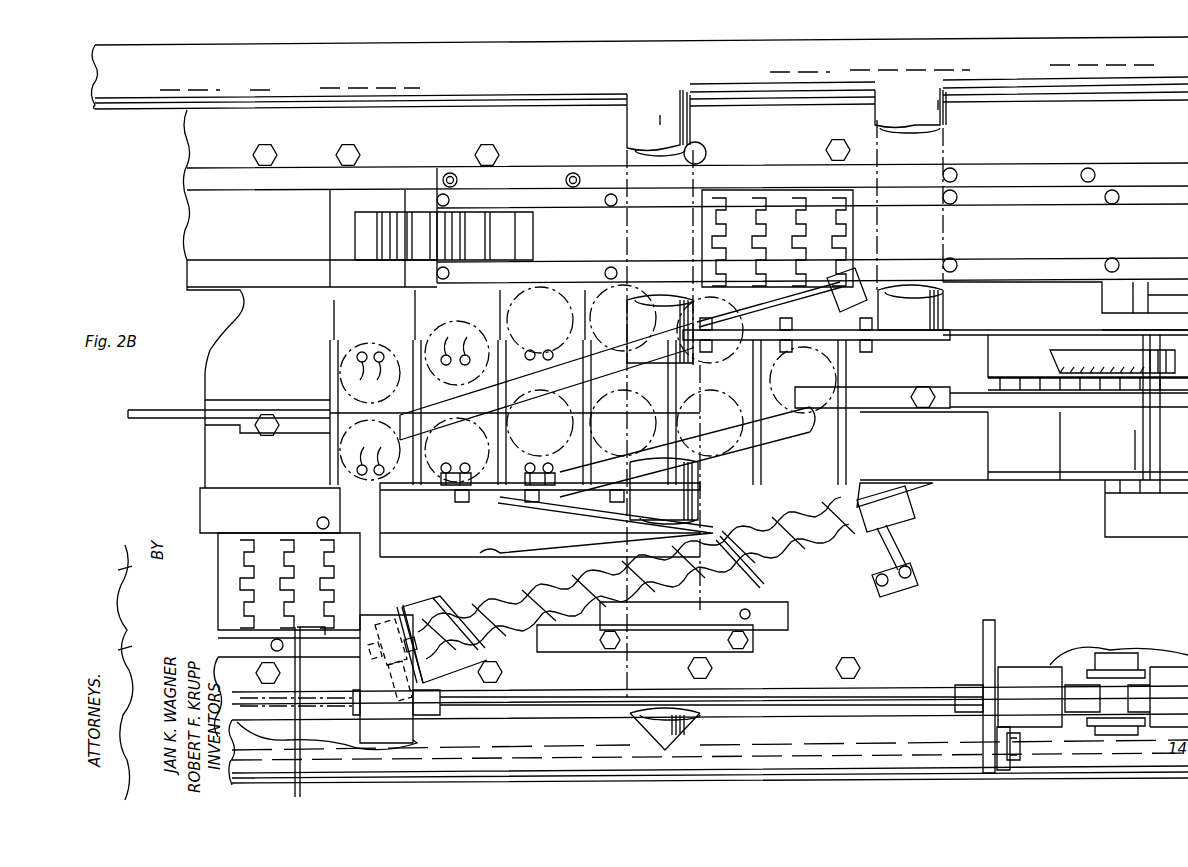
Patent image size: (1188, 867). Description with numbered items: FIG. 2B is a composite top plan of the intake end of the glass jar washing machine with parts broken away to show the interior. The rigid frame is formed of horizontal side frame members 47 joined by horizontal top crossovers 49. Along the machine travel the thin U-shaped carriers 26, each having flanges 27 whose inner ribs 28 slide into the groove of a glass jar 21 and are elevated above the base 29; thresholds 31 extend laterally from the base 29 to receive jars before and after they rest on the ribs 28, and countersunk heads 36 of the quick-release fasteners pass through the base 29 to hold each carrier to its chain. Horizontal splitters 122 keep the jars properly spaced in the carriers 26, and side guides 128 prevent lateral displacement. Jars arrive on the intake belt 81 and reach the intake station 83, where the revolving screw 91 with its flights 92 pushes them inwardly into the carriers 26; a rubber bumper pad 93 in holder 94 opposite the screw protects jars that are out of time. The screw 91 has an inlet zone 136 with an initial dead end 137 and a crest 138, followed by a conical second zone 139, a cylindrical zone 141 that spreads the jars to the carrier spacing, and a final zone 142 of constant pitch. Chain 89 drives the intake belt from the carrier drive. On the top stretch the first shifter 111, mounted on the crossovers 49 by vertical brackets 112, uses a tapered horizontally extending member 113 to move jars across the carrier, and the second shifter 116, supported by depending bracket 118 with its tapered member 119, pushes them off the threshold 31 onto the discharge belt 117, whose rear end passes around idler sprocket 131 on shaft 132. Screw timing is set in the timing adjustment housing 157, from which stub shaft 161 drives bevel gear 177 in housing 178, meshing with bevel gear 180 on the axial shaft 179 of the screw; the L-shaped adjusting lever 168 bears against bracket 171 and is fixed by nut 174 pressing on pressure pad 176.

The glass jar 21 is at (368, 345).
The carrier 26 is at (406, 312).
The flange 27 is at (510, 340).
The rib 28 is at (482, 400).
The base 29 is at (810, 371).
The threshold 31 is at (365, 312).
The countersunk head 36 is at (447, 406).
The horizontal side frame member 47 is at (820, 778).
The horizontal top crossover 49 is at (690, 128).
The intake belt 81 is at (287, 635).
The intake station 83 is at (448, 535).
The chain 89 is at (1018, 374).
The screw 91 is at (529, 650).
The flight 92 is at (642, 598).
The rubber bumper pad 93 is at (497, 546).
The holder 94 is at (515, 513).
The first shifter 111 is at (790, 435).
The vertical bracket 112 is at (398, 490).
The tapered horizontally extending member 113 is at (804, 439).
The second shifter 116 is at (552, 394).
The discharge belt 117 is at (777, 238).
The depending bracket 118 is at (804, 330).
The tapered member 119 is at (529, 398).
The horizontal splitter 122 is at (275, 413).
The side guide 128 is at (280, 280).
The idler sprocket 131 is at (355, 245).
The shaft 132 is at (405, 199).
The inlet zone 136 is at (430, 605).
The initial dead end 137 is at (394, 605).
The crest 138 is at (495, 590).
The second zone 139 is at (575, 593).
The cylindrical zone 141 is at (716, 532).
The final zone 142 is at (816, 512).
The timing adjustment housing 157 is at (1015, 667).
The stub shaft 161 is at (918, 705).
The L-shaped adjusting lever 168 is at (1007, 742).
The bracket 171 is at (995, 633).
The nut 174 is at (1097, 704).
The pressure pad 176 is at (1010, 768).
The bevel gear 177 is at (414, 737).
The housing 178 is at (398, 746).
The axial shaft 179 is at (412, 650).
The bevel gear 180 is at (370, 668).